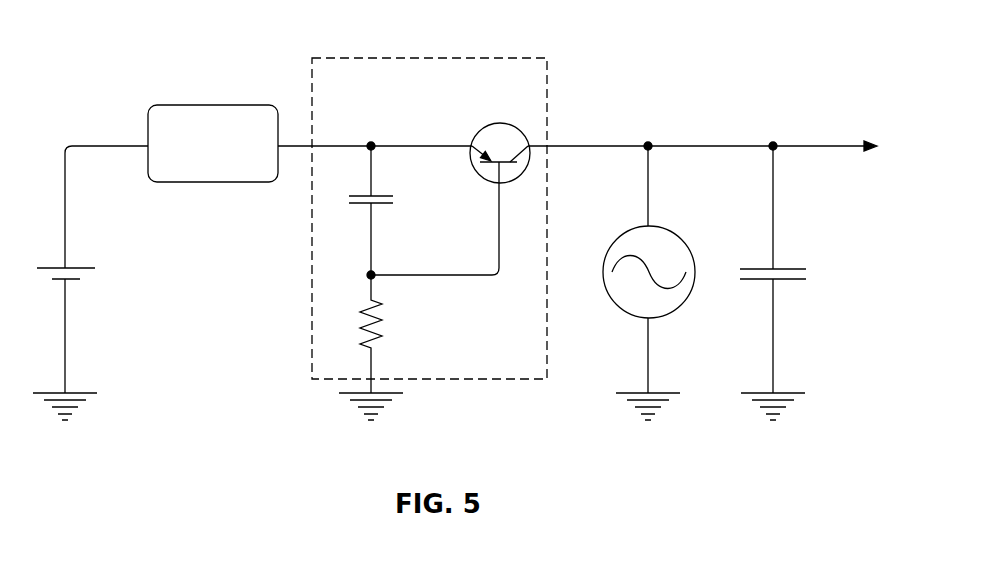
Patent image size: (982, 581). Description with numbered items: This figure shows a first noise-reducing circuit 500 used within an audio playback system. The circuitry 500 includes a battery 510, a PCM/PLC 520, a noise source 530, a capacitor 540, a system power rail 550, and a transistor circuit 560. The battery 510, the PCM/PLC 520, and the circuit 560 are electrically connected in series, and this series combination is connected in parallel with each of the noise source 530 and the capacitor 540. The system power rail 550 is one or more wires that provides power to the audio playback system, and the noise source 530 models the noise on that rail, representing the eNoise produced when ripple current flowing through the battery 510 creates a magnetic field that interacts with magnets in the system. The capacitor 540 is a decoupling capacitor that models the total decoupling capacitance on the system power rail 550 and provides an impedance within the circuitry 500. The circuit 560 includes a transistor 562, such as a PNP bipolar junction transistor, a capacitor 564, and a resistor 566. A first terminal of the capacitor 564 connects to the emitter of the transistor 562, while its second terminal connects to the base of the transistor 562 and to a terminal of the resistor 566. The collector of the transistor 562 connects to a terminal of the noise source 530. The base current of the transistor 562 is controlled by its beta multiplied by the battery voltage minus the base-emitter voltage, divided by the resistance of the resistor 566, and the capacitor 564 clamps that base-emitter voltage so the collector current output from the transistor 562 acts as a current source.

The noise-reducing circuit 500 is at (652, 82).
The battery 510 is at (82, 250).
The PCM/PLC 520 is at (187, 86).
The noise source 530 is at (667, 221).
The capacitor 540 is at (806, 241).
The system power rail 550 is at (860, 103).
The transistor circuit 560 is at (366, 51).
The transistor 562 is at (482, 120).
The capacitor 564 is at (382, 230).
The resistor 566 is at (402, 322).